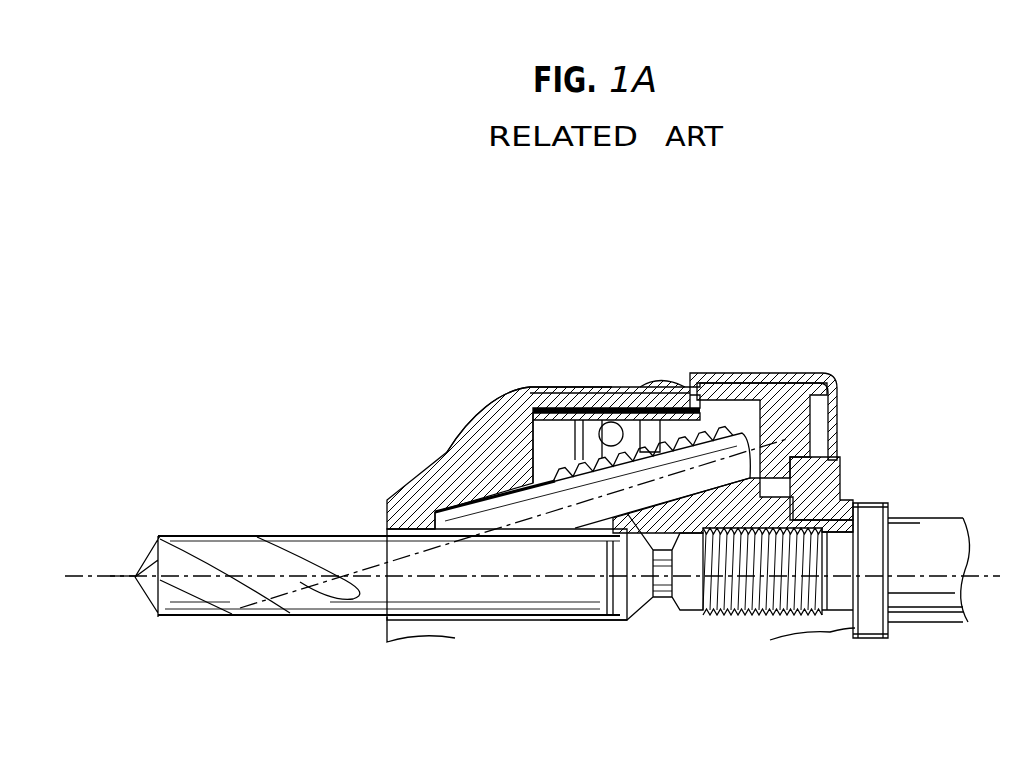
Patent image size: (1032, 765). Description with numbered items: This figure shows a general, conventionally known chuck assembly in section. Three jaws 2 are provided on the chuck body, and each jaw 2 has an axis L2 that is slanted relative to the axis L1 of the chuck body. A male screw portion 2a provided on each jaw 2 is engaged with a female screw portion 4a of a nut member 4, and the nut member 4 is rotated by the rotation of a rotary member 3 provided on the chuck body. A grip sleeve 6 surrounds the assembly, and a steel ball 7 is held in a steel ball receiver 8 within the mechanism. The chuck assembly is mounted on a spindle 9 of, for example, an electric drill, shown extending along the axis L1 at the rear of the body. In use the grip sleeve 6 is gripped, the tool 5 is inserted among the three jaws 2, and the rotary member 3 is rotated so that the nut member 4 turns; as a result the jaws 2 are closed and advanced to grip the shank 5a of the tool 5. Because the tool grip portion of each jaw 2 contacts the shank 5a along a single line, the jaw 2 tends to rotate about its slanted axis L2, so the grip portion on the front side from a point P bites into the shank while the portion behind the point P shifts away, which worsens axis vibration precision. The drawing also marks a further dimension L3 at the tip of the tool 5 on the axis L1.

The jaw 2 is at (742, 417).
The male screw portion 2a is at (703, 390).
The rotary member 3 is at (525, 422).
The nut member 4 is at (613, 425).
The female screw portion 4a is at (510, 450).
The tool 5 is at (232, 620).
The shank 5a is at (487, 620).
The grip sleeve 6 is at (797, 372).
The steel ball 7 is at (612, 425).
The steel ball receiver 8 is at (650, 390).
The spindle 9 is at (922, 540).
The point P is at (437, 500).
The axis of the chuck body L1 is at (990, 565).
The axis of the jaw L2 is at (380, 520).
The drill tip L3 is at (117, 580).